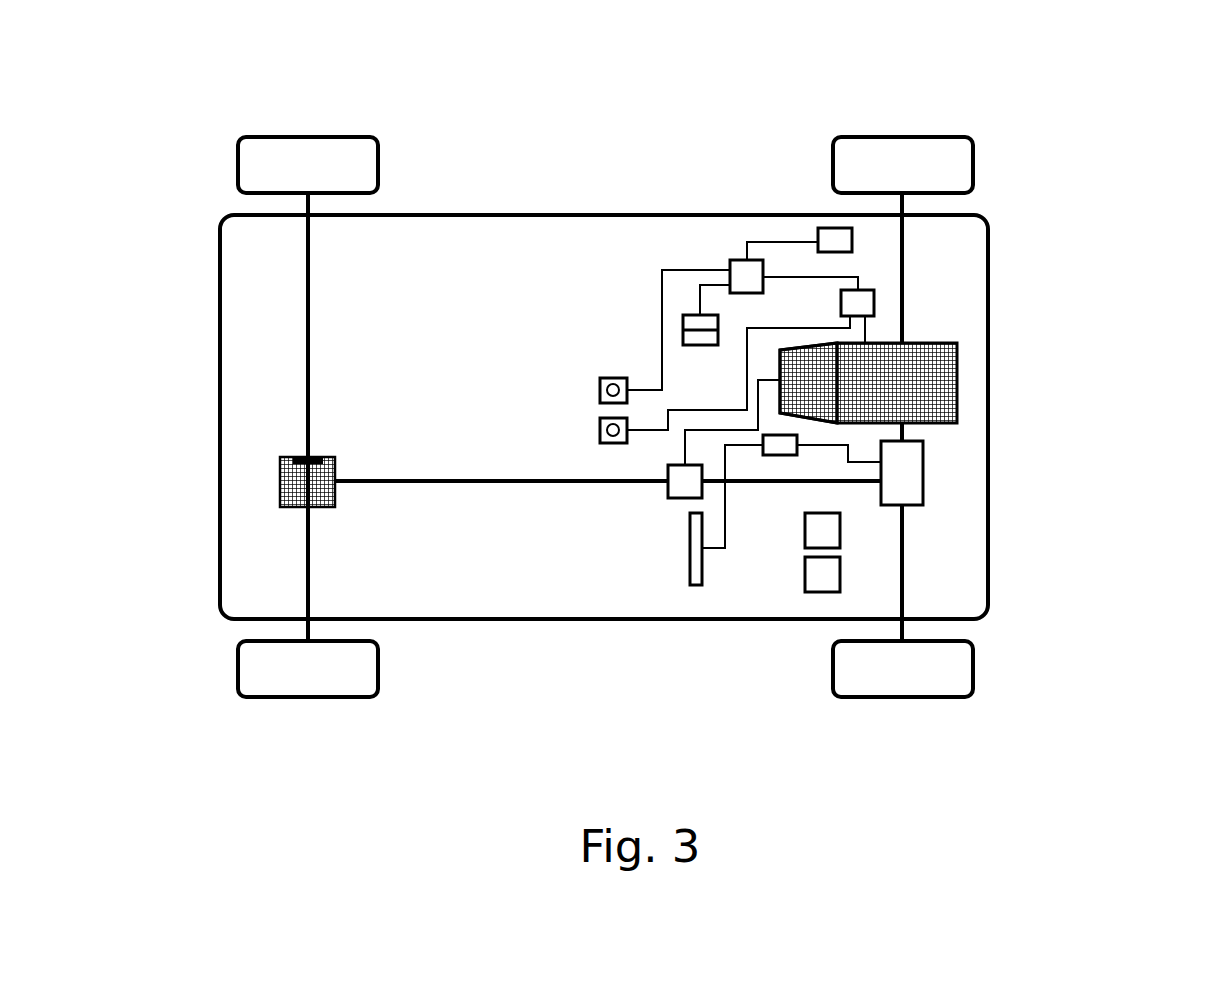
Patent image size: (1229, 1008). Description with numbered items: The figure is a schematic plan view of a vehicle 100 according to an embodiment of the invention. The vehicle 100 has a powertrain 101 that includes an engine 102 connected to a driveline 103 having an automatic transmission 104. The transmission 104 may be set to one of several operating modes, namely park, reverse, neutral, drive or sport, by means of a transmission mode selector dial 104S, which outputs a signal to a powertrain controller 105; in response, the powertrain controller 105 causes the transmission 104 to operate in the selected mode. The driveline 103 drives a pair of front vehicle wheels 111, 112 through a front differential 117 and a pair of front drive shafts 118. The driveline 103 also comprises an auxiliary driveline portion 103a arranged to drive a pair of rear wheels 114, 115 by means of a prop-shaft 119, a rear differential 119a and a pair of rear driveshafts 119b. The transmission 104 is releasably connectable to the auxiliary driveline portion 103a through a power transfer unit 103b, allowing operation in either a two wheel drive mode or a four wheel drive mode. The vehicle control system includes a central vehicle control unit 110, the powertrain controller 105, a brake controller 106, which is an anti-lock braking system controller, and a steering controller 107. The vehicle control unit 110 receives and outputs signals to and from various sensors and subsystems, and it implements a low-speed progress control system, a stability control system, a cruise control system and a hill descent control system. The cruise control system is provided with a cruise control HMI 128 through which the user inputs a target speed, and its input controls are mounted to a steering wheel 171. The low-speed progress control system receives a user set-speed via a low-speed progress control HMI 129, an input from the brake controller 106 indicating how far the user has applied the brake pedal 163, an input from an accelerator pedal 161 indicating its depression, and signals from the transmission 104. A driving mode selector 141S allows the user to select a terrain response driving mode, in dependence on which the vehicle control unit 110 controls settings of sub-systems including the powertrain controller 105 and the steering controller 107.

The vehicle 100 is at (1132, 155).
The powertrain 101 is at (1125, 384).
The engine 102 is at (930, 370).
The driveline 103 is at (586, 512).
The auxiliary driveline portion 103a is at (497, 670).
The power transfer unit 103b is at (680, 492).
The automatic transmission 104 is at (800, 357).
The transmission mode selector dial 104S is at (600, 430).
The powertrain controller 105 is at (870, 305).
The brake controller 106 is at (826, 233).
The steering controller 107 is at (778, 450).
The vehicle control unit 110 is at (740, 262).
The front vehicle wheel 111 is at (952, 160).
The front vehicle wheel 112 is at (952, 675).
The rear wheel 114 is at (282, 160).
The rear wheel 115 is at (265, 675).
The front differential 117 is at (916, 468).
The front drive shafts 118 is at (1018, 570).
The prop-shaft 119 is at (435, 481).
The rear differential 119a is at (280, 483).
The rear driveshafts 119b is at (305, 552).
The cruise control HMI 128 is at (626, 212).
The low-speed progress control HMI 129 is at (683, 322).
The driving mode selector 141S is at (600, 388).
The accelerator pedal 161 is at (822, 583).
The brake pedal 163 is at (822, 530).
The steering wheel 171 is at (695, 583).